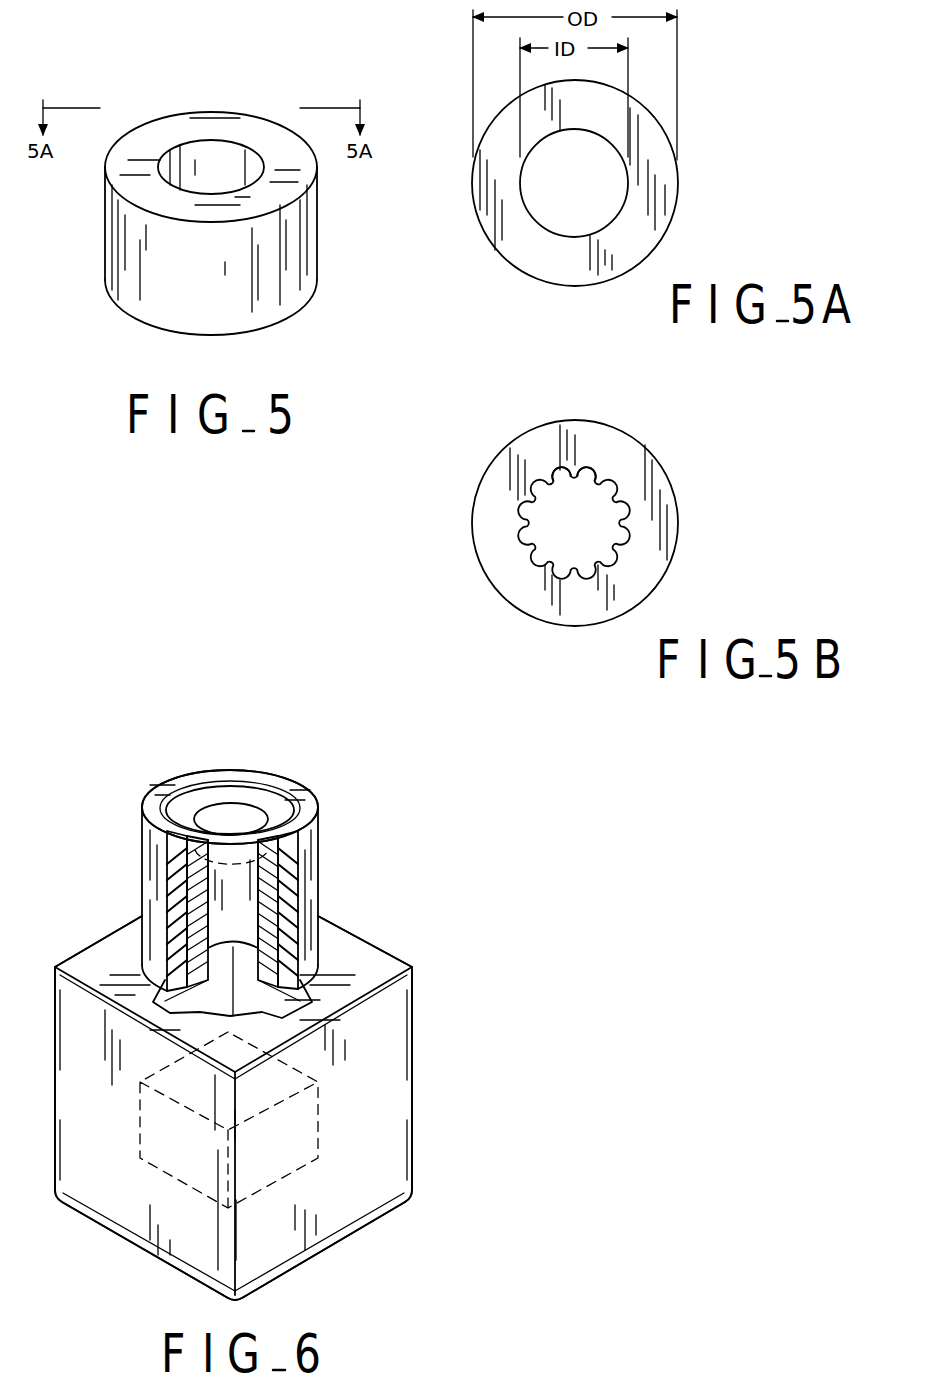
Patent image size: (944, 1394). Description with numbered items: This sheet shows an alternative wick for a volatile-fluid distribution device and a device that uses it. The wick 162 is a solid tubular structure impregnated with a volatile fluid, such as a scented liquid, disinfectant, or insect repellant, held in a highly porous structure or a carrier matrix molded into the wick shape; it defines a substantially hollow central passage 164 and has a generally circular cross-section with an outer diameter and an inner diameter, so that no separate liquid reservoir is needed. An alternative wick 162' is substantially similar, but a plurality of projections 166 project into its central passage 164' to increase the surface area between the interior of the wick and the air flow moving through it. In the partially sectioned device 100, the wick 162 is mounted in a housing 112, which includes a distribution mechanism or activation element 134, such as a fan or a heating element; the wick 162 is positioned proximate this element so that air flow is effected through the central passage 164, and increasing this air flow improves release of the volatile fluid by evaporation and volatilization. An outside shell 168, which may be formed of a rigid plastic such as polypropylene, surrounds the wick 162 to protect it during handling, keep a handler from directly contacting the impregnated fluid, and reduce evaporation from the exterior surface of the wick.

In FIG. 6, the device 100 is at (424, 916).
In FIG. 6, the housing 112 is at (420, 1094).
In FIG. 6, the activation element 134 is at (318, 1158).
In FIG. 5, the wick 162 is at (179, 223).
In FIG. 5A, the wick 162 is at (623, 183).
In FIG. 6, the wick 162 is at (268, 882).
In FIG. 5B, the alternative wick 162' is at (614, 519).
In FIG. 5, the central passage 164 is at (273, 167).
In FIG. 5A, the central passage 164 is at (639, 183).
In FIG. 6, the central passage 164 is at (253, 832).
In FIG. 5B, the central passage 164' is at (641, 522).
In FIG. 5B, the projections 166 is at (548, 477).
In FIG. 6, the shell 168 is at (305, 856).